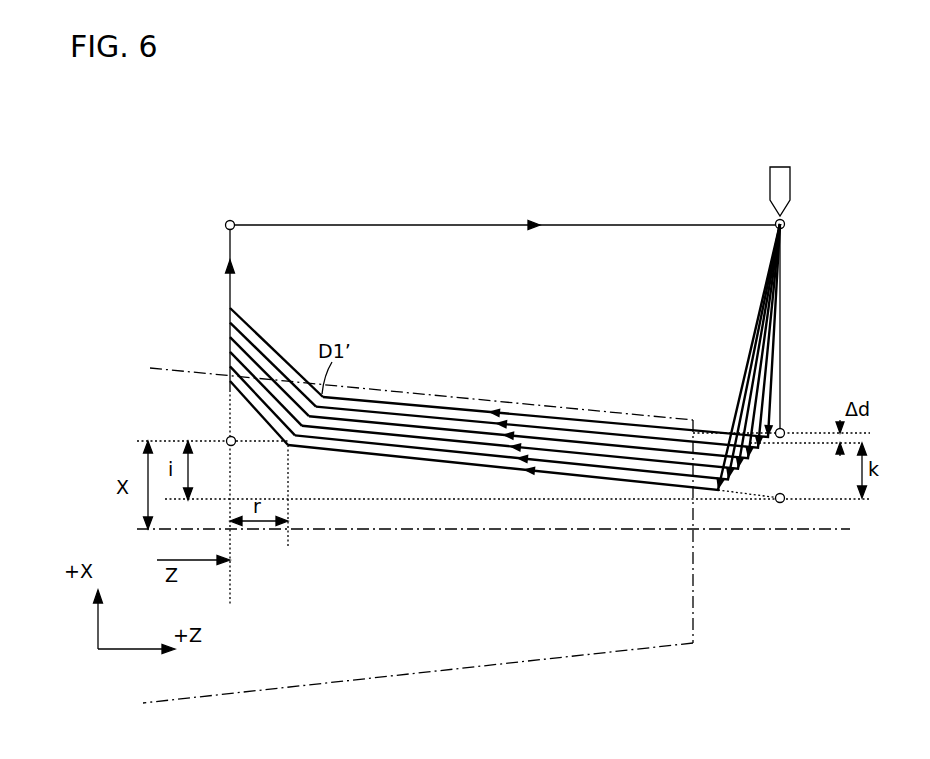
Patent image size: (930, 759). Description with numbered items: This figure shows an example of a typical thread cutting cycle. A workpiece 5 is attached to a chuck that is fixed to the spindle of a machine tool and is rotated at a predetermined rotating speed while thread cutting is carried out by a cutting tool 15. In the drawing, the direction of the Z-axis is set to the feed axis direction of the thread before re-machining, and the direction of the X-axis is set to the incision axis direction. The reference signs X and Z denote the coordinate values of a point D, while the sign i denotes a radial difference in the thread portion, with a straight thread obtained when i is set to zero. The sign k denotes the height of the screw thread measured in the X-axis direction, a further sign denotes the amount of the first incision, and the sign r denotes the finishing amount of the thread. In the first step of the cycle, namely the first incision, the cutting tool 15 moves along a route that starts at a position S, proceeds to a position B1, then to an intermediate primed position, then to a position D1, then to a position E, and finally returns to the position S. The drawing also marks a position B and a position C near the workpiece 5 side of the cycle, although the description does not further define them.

The cutting tool 15 is at (790, 190).
The workpiece 5 is at (693, 593).
The position E is at (222, 213).
The position S is at (793, 235).
The point D is at (241, 455).
The point B is at (783, 430).
The point C is at (785, 502).
The position D1 is at (233, 310).
The position B1 is at (773, 447).